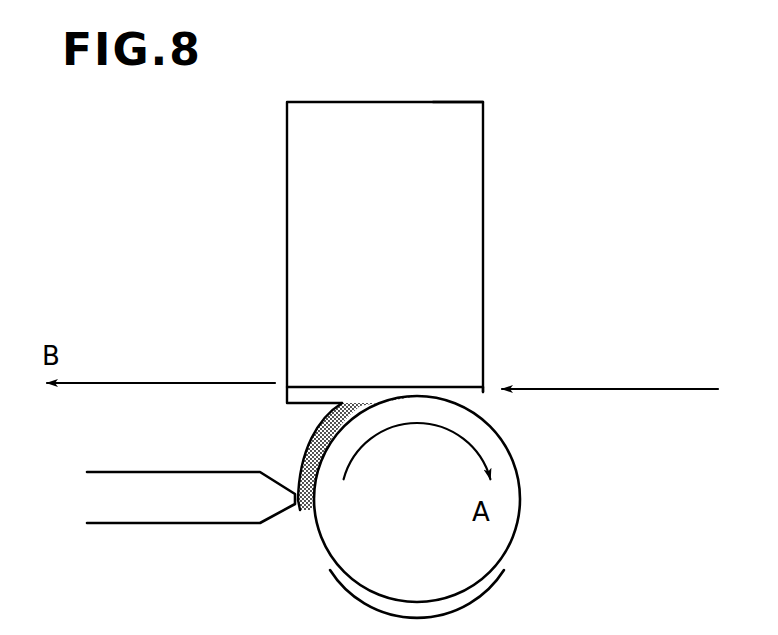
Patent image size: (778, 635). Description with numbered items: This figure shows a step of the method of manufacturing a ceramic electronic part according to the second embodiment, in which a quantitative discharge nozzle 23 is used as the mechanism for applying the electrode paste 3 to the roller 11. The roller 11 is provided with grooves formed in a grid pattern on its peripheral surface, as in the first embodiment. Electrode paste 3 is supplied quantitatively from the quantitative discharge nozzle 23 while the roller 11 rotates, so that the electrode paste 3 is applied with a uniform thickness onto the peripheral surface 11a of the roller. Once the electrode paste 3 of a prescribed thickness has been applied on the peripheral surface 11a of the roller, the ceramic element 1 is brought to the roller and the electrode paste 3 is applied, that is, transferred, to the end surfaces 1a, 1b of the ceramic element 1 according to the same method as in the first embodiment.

The ceramic element 1 is at (483, 198).
The end surface of the ceramic element 1a is at (480, 391).
The end surface of the ceramic element 1b is at (432, 102).
The electrode paste 3 is at (322, 437).
The roller 11 is at (520, 513).
The peripheral surface of the roller 11a is at (473, 585).
The quantitative discharge nozzle 23 is at (213, 525).